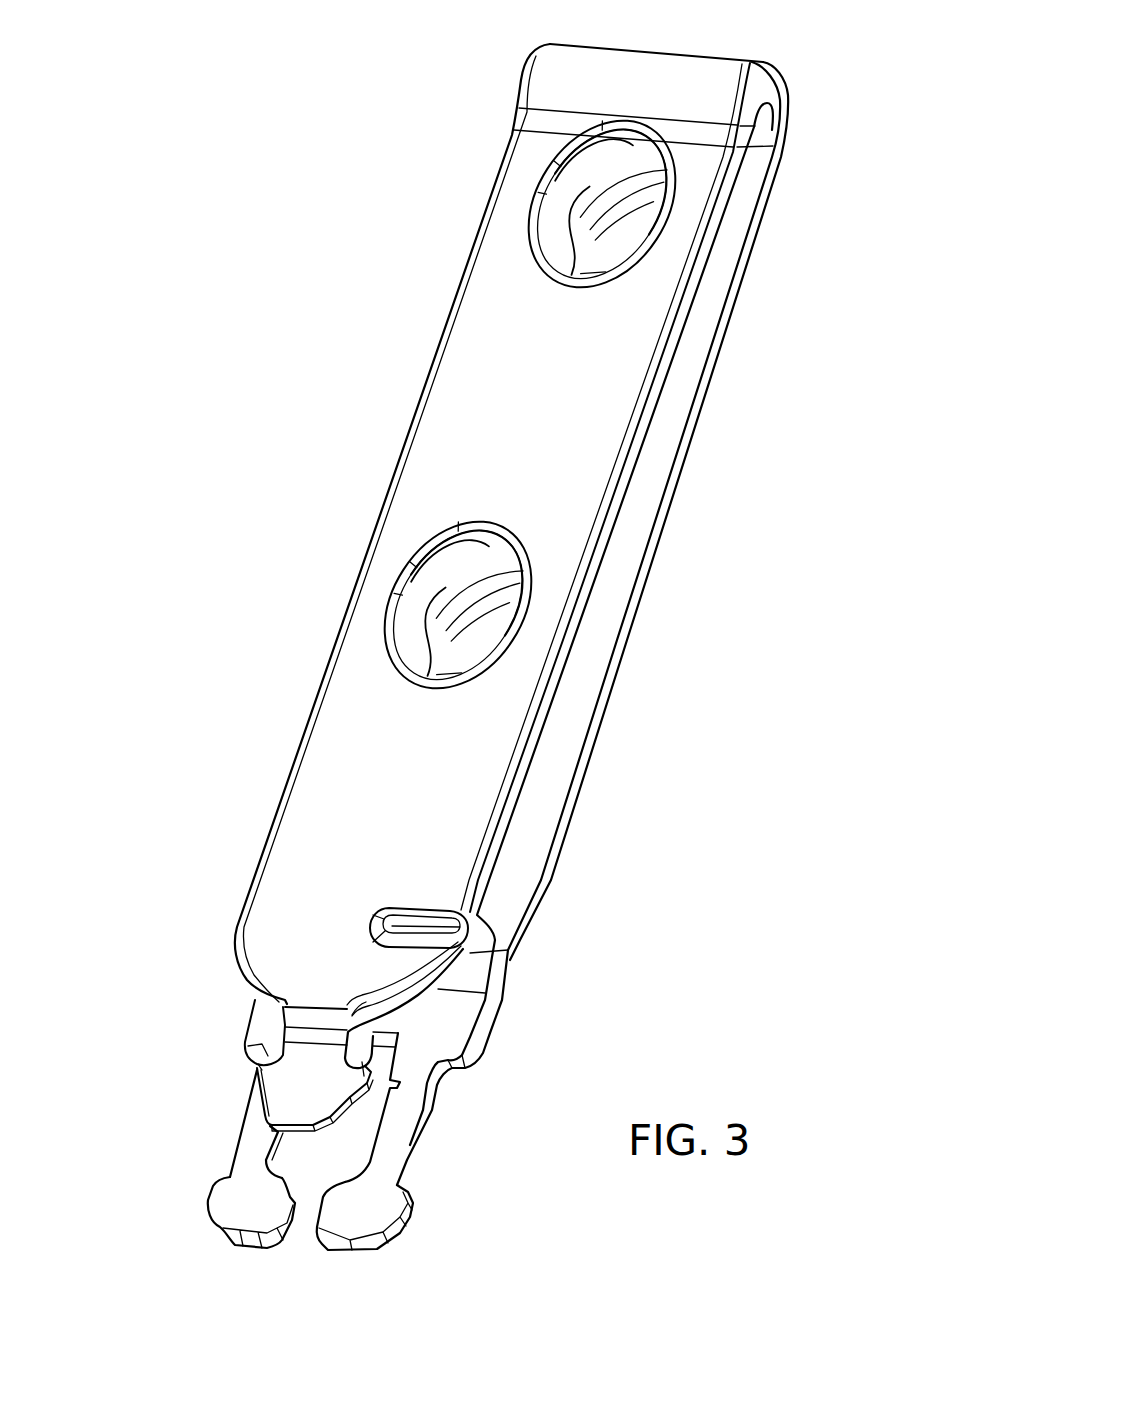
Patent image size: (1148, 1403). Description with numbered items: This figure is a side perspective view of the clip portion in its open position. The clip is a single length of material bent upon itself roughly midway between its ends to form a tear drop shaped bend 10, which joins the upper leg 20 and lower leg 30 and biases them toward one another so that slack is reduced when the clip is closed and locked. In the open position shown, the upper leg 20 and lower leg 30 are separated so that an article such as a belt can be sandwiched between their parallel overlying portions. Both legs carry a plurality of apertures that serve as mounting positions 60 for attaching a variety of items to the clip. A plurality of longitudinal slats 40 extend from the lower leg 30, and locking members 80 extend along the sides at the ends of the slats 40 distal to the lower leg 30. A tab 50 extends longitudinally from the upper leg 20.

The tear drop shaped bend 10 is at (474, 627).
The upper leg 20 is at (472, 399).
The lower leg 30 is at (700, 427).
The longitudinal slats 40 is at (245, 1158).
The tab 50 is at (277, 1090).
The mounting positions 60 is at (627, 232).
The locking members 80 is at (222, 1227).